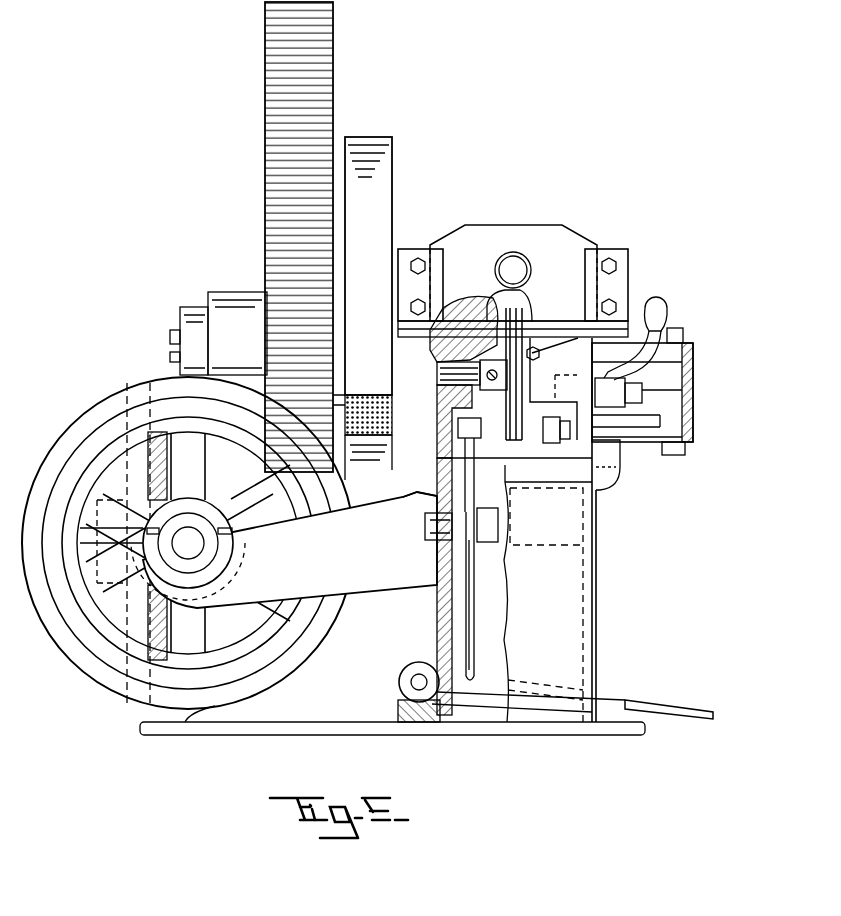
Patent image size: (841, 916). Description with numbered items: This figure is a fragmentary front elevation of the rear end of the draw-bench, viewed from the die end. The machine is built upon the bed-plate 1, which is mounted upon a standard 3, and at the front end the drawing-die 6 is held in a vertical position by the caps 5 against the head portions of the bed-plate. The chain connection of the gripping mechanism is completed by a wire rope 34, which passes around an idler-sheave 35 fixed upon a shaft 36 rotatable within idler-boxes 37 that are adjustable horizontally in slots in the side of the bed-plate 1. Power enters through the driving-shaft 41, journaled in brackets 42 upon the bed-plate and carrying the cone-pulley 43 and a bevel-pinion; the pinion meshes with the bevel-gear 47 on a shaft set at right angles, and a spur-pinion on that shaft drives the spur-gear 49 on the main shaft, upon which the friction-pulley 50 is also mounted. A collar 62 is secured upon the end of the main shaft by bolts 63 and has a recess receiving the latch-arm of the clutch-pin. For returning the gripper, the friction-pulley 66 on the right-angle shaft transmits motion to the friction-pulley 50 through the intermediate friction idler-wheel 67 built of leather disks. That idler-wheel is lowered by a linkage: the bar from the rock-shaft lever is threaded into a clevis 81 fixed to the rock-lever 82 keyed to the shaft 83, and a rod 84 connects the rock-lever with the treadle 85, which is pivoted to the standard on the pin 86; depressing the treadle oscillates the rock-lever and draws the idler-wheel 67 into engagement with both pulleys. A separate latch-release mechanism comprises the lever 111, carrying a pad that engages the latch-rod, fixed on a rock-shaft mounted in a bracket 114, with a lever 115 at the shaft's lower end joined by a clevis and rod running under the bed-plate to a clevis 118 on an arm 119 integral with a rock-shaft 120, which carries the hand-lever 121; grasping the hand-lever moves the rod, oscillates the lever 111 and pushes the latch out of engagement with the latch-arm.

The bed-plate 1 is at (588, 458).
The standard 3 is at (597, 640).
The cap 5 is at (642, 252).
The drawing-die 6 is at (515, 228).
The wire rope 34 is at (518, 305).
The idler-sheave 35 is at (505, 425).
The shaft 36 is at (437, 372).
The idler-box 37 is at (470, 356).
The driving-shaft 41 is at (192, 548).
The bracket 42 is at (375, 588).
The cone-pulley 43 is at (96, 680).
The bevel-gear 47 is at (160, 645).
The spur-gear 49 is at (267, 67).
The friction-pulley 50 is at (392, 158).
The collar 62 is at (190, 307).
The bolt 63 is at (170, 337).
The friction-pulley 66 is at (380, 487).
The friction idler-wheel 67 is at (330, 400).
The clevis 81 is at (440, 425).
The rock-lever 82 is at (474, 495).
The shaft 83 is at (437, 538).
The rod 84 is at (474, 600).
The treadle 85 is at (660, 703).
The pin 86 is at (410, 683).
The lever 111 is at (693, 352).
The bracket 114 is at (690, 374).
The lever 115 is at (693, 437).
The clevis 118 is at (552, 443).
The arm 119 is at (600, 450).
The rock-shaft 120 is at (682, 396).
The hand-lever 121 is at (667, 314).